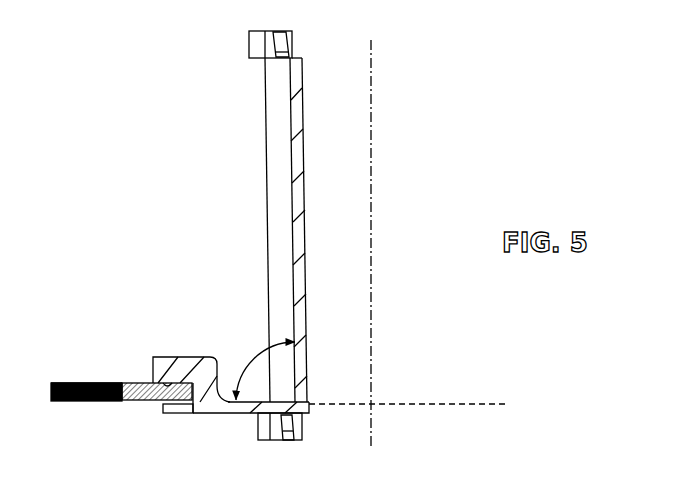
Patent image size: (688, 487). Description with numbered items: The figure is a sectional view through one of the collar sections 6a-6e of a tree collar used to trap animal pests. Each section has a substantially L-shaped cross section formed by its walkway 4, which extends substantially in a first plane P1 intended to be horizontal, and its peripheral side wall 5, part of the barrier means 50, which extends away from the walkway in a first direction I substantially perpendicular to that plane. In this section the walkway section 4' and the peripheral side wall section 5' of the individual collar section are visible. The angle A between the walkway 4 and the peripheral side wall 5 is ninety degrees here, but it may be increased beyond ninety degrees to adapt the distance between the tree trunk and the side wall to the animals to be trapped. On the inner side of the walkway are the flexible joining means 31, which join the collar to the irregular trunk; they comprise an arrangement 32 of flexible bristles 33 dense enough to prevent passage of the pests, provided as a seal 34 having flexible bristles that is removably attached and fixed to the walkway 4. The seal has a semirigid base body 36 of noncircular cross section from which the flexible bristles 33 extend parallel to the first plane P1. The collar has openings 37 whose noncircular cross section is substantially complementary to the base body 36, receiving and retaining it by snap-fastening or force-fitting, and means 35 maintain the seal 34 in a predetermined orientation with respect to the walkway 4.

The substantially annular walkway 4 is at (251, 434).
The walkway section 4' is at (242, 428).
The peripheral side wall 5 is at (305, 235).
The peripheral side wall section 5' is at (329, 230).
The barrier means 50 is at (308, 196).
The collar sections 6a-6e is at (245, 158).
The flexible joining means 31 is at (137, 379).
The arrangement of flexible bristles 32 is at (119, 379).
The flexible bristles 33 is at (55, 401).
The seal having flexible bristles 34 is at (82, 379).
The means for maintaining the seal in a fixed orientation 35 is at (197, 355).
The semirigid base body 36 is at (166, 414).
The openings 37 is at (182, 382).
The angle A is at (252, 362).
The first plane P1 is at (434, 400).
The first direction I is at (383, 243).